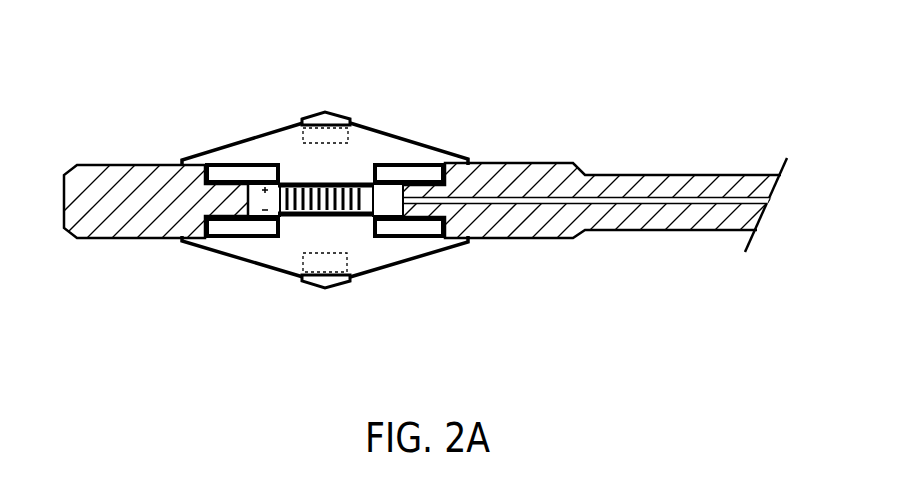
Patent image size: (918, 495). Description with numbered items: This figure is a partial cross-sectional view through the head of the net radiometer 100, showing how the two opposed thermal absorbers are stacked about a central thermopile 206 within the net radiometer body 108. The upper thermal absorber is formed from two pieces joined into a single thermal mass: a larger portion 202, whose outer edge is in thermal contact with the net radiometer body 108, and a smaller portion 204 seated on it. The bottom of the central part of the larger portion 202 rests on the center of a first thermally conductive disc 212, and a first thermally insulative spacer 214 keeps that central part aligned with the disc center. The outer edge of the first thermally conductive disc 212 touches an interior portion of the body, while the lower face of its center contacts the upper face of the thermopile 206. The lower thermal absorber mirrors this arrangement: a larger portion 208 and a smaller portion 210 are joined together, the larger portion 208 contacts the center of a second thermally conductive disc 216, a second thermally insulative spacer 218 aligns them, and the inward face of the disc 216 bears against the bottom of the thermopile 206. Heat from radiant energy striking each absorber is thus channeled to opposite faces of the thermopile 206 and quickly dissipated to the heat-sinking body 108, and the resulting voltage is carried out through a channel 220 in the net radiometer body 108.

The net radiometer 100 is at (187, 185).
The net radiometer body 108 is at (505, 165).
The larger portion 202 is at (417, 141).
The smaller portion 204 is at (342, 118).
The thermopile 206 is at (360, 214).
The larger portion 208 is at (280, 269).
The smaller portion 210 is at (318, 288).
The first thermally conductive disc 212 is at (223, 181).
The first thermally insulative spacer 214 is at (262, 172).
The second thermally conductive disc 216 is at (220, 218).
The second thermally insulative spacer 218 is at (262, 228).
The channel 220 is at (600, 197).